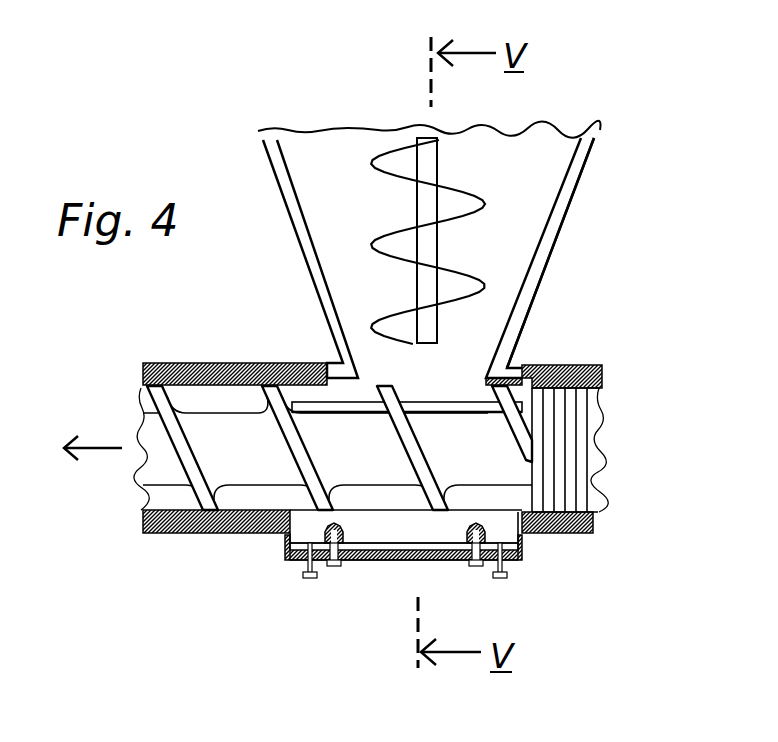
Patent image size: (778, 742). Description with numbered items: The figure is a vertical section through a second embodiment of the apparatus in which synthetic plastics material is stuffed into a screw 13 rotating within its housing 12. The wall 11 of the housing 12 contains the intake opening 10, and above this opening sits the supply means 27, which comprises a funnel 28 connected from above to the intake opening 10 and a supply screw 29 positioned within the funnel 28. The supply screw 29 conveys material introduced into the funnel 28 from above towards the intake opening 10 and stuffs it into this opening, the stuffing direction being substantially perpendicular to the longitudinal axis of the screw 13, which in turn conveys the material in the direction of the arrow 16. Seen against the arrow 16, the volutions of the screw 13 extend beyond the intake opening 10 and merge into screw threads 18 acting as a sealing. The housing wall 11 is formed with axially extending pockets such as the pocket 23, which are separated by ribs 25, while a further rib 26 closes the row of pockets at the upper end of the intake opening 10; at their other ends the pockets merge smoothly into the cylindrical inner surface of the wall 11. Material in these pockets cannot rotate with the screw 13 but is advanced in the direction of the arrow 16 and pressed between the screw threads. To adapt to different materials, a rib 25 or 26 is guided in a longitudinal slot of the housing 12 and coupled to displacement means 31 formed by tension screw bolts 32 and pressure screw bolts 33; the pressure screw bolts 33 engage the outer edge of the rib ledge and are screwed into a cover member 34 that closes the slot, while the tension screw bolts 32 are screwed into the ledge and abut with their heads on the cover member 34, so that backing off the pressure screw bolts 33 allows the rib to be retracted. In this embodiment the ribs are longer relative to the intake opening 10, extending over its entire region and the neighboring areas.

The intake opening 10 is at (438, 387).
The wall 11 is at (585, 396).
The housing 12 is at (567, 365).
The screw 13 is at (245, 465).
The arrow 16 is at (92, 447).
The screw threads 18 is at (586, 453).
The pocket 23 is at (540, 535).
The rib 25 is at (395, 530).
The rib 26 is at (308, 401).
The supply means 27 is at (540, 208).
The funnel 28 is at (537, 276).
The supply screw 29 is at (463, 196).
The displacement means 31 is at (396, 576).
The tension screw bolts 32 is at (324, 566).
The pressure screw bolts 33 is at (303, 577).
The cover member 34 is at (520, 561).